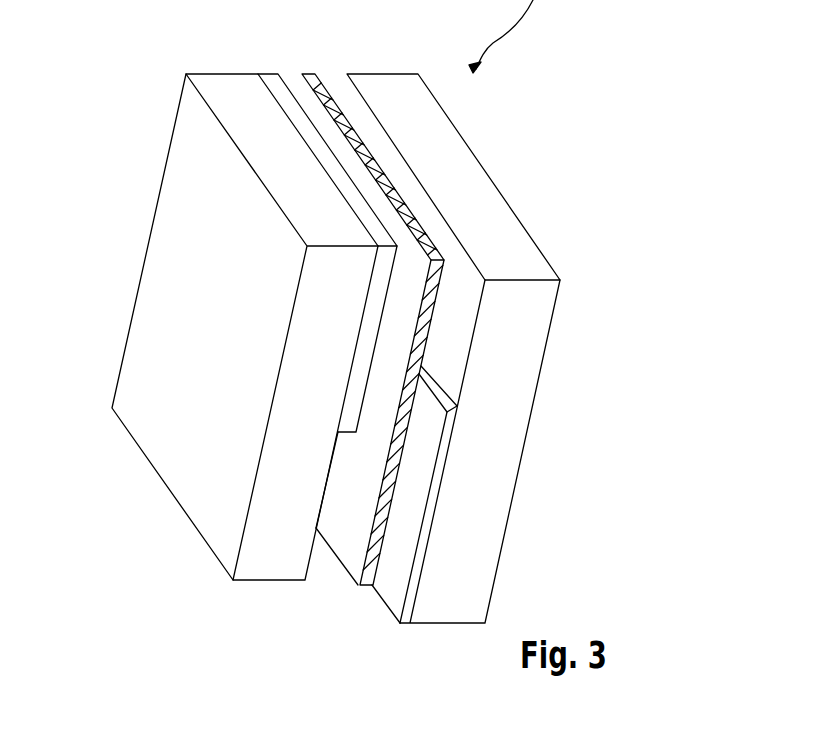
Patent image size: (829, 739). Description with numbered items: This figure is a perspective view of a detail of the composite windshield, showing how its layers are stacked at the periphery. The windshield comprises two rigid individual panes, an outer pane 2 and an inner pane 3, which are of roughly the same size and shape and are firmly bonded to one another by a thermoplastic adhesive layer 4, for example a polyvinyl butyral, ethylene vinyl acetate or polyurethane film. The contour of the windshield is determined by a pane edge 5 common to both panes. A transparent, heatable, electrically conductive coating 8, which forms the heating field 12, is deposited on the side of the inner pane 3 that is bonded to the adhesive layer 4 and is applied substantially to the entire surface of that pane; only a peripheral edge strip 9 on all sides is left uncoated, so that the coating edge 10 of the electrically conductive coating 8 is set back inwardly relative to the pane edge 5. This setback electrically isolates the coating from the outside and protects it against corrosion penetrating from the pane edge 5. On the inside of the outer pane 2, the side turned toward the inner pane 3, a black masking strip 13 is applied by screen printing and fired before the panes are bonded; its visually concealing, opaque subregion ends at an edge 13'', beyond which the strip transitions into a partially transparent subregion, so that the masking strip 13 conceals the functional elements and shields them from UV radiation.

The outer pane 2 is at (182, 317).
The masking strip 13 is at (253, 253).
The edge of the visually concealing, opaque subregion of the masking strip 13'' is at (249, 505).
The electrically conductive coating 8 is at (394, 583).
The heating field 12 is at (391, 585).
The adhesive layer 4 is at (344, 542).
The inner pane 3 is at (490, 510).
The peripheral pane edge 5 is at (463, 164).
The peripheral edge strip 9 is at (460, 323).
The peripheral coating edge 10 is at (440, 395).